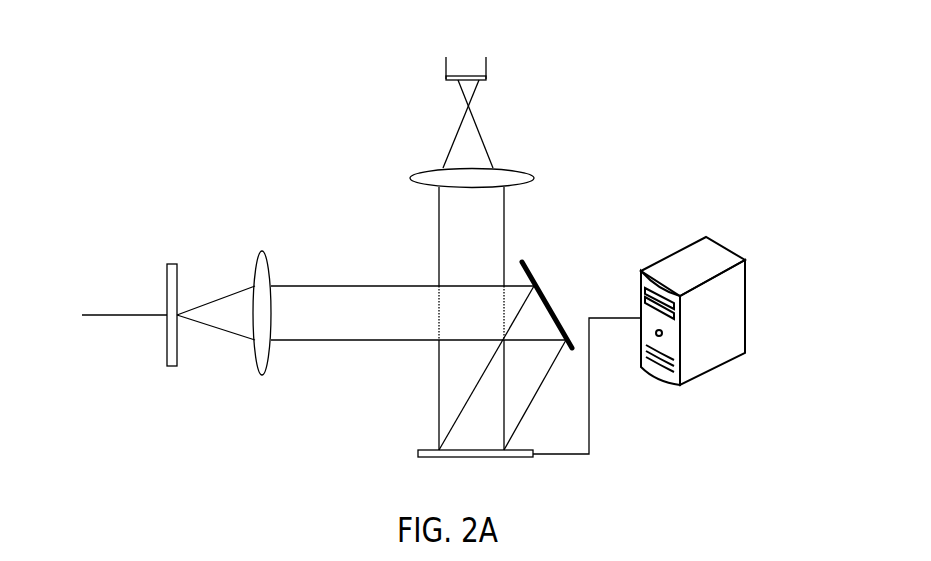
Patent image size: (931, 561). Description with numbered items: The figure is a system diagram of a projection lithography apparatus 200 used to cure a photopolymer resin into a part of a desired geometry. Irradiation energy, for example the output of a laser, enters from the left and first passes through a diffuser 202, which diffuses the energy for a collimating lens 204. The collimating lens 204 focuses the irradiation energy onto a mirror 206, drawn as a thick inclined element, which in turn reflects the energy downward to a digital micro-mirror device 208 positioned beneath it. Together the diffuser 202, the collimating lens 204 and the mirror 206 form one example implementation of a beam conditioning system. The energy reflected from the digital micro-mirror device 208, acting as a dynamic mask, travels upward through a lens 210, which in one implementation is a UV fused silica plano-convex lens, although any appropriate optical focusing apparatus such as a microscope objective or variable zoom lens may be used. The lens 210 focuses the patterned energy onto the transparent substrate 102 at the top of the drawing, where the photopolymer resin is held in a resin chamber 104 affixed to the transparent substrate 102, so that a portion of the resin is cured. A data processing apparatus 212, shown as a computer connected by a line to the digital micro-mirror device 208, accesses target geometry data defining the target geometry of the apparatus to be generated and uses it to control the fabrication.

The projection lithography apparatus 200 is at (291, 159).
The transparent substrate 102 is at (446, 77).
The resin chamber 104 is at (488, 66).
The diffuser 202 is at (167, 292).
The collimating lens 204 is at (255, 262).
The mirror 206 is at (523, 262).
The digital micro-mirror device 208 is at (418, 450).
The lens 210 is at (536, 176).
The data processing apparatus 212 is at (731, 250).